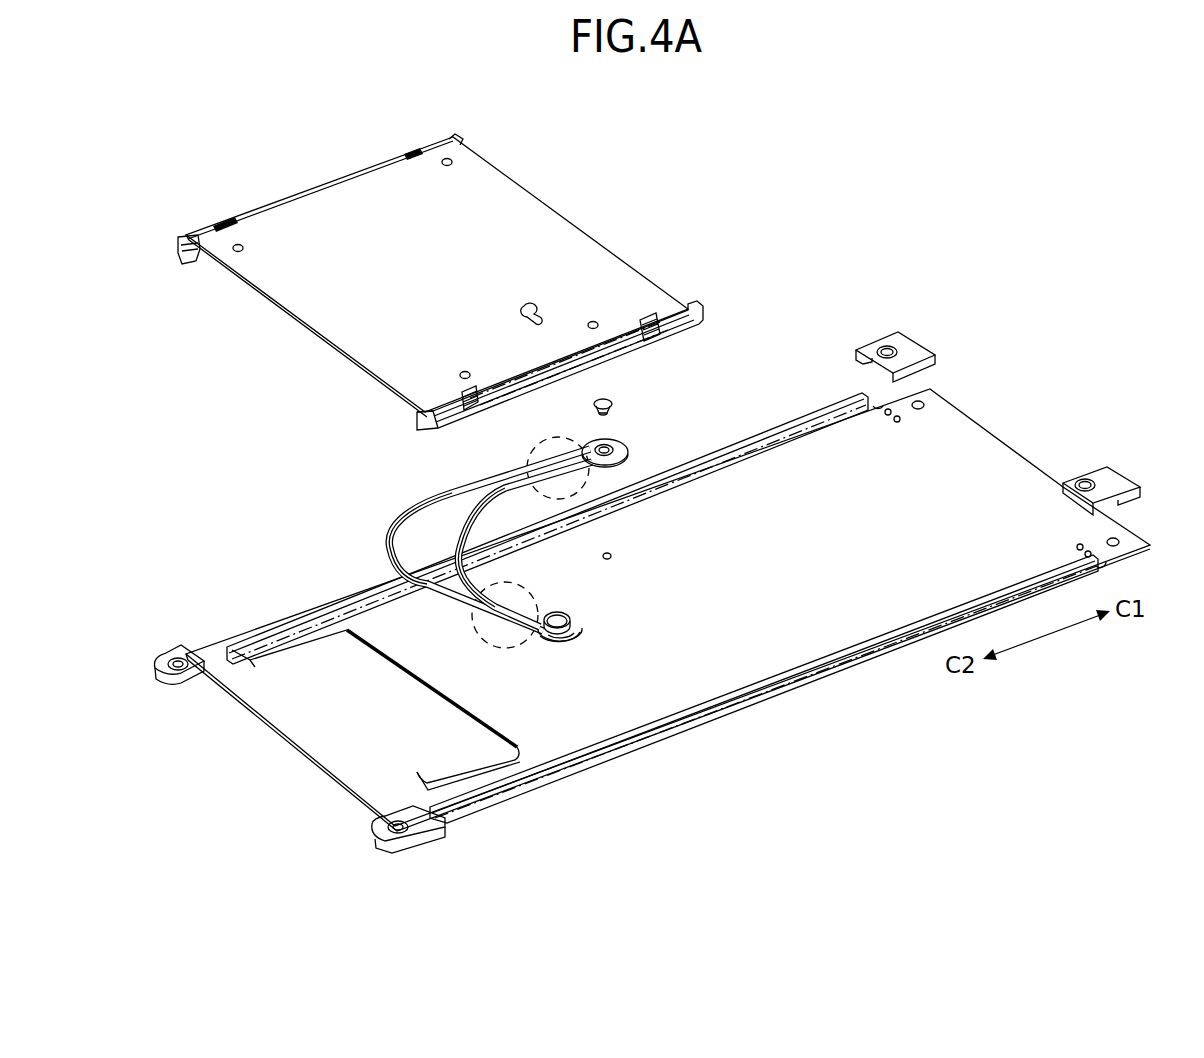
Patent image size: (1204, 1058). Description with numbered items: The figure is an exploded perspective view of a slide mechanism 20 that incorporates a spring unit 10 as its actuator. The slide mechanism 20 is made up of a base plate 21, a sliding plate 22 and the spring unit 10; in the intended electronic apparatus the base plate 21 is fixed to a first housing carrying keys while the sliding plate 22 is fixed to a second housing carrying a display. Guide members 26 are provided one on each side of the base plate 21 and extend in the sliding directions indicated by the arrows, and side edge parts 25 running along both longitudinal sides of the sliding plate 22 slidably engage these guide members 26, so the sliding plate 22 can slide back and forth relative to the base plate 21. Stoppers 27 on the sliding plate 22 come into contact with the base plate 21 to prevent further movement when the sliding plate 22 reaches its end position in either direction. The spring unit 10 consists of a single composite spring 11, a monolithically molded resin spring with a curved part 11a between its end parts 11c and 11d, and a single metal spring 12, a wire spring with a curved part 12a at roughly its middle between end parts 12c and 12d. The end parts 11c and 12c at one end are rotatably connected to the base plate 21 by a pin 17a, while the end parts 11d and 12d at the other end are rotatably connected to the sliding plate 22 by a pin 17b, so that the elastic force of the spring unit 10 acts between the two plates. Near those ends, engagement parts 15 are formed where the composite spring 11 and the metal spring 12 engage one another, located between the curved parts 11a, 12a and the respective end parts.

The slide mechanism 20 is at (813, 130).
The base plate 21 is at (497, 226).
The sliding plate 22 is at (974, 448).
The side edge parts 25 is at (263, 642).
The guide members 26 is at (190, 235).
The stoppers 27 is at (905, 341).
The spring unit 10 is at (440, 598).
The composite spring 11 is at (498, 529).
The curved part 11a is at (466, 540).
The end part 11c is at (553, 642).
The end part 11d is at (618, 442).
The metal spring 12 is at (404, 500).
The curved part 12a is at (398, 528).
The end part 12c is at (568, 636).
The end part 12d is at (634, 466).
The engagement parts 15 is at (530, 456).
The pin 17a is at (573, 617).
The pin 17b is at (612, 402).